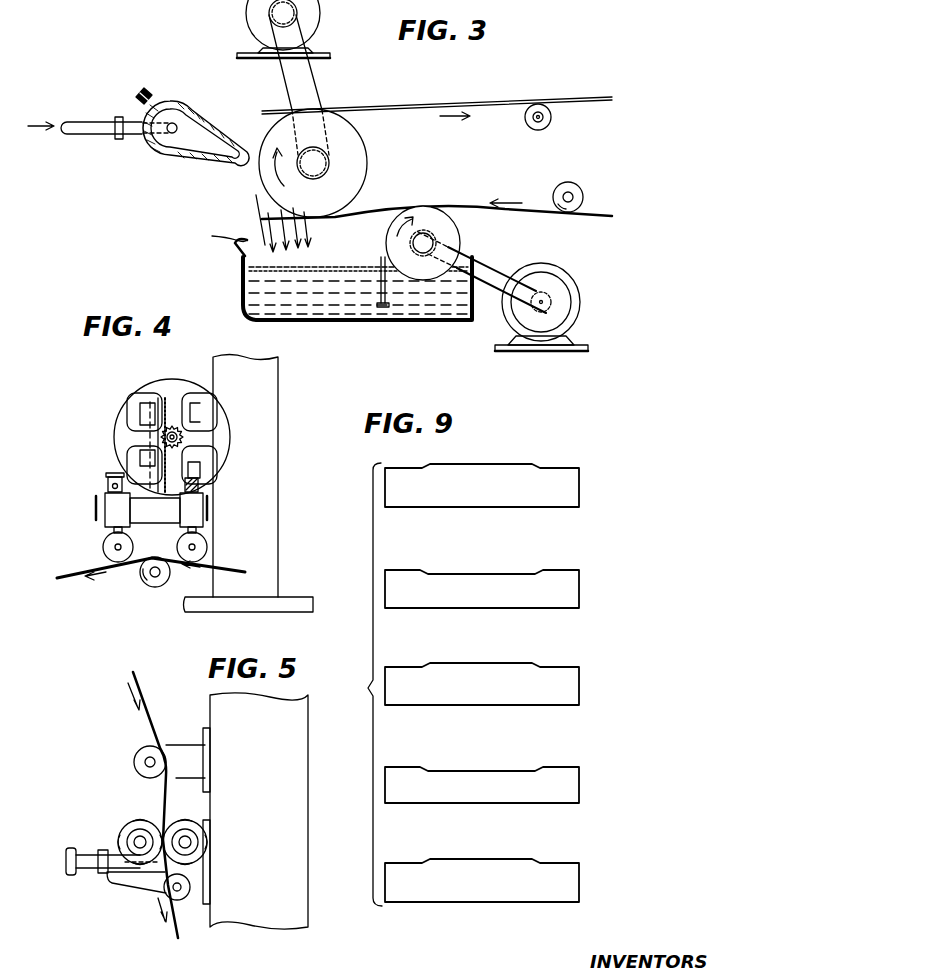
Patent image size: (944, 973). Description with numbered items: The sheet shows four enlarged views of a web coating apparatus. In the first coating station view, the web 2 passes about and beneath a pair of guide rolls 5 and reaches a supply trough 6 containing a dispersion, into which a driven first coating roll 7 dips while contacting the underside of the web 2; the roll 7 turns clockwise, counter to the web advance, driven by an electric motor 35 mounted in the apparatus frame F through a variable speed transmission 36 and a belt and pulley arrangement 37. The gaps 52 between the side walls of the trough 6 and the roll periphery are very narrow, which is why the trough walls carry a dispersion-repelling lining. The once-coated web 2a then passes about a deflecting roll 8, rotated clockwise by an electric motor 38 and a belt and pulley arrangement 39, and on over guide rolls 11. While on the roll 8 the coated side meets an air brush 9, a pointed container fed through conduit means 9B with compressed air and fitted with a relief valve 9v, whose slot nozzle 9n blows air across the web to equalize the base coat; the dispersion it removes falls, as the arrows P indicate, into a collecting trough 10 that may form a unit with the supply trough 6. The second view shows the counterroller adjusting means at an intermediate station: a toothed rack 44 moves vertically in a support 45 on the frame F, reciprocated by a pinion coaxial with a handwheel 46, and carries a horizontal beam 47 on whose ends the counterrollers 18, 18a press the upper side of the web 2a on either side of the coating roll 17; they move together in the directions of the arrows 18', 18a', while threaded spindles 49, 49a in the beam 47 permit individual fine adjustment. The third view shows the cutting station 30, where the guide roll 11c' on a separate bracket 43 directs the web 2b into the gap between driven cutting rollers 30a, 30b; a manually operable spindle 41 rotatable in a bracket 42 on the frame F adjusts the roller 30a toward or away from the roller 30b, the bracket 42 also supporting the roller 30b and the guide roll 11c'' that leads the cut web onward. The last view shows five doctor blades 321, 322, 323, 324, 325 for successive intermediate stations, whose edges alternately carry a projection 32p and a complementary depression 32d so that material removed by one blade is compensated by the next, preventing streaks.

In FIG. 3, the electric motor 38 is at (254, 8).
In FIG. 3, the apparatus frame F is at (256, 52).
In FIG. 4, the apparatus frame F is at (298, 600).
In FIG. 5, the apparatus frame F is at (296, 750).
In FIG. 3, the belt and pulley arrangement 39 is at (312, 86).
In FIG. 3, the deflecting roll 8 is at (352, 154).
In FIG. 3, the once-coated web 2a is at (411, 108).
In FIG. 4, the once-coated web 2a is at (221, 567).
In FIG. 3, the guide rolls 11 is at (527, 122).
In FIG. 3, the web 2 is at (524, 212).
In FIG. 3, the guide rolls 5 is at (573, 184).
In FIG. 3, the arrows P is at (258, 214).
In FIG. 3, the collecting trough 10 is at (319, 312).
In FIG. 3, the supply trough 6 is at (422, 310).
In FIG. 3, the first coating roll 7 is at (432, 220).
In FIG. 3, the gaps 52 is at (398, 258).
In FIG. 3, the belt and pulley arrangement 37 is at (500, 272).
In FIG. 3, the electric motor 35 is at (560, 286).
In FIG. 3, the variable speed transmission 36 is at (556, 333).
In FIG. 3, the air brush 9 is at (182, 122).
In FIG. 3, the relief valve 9v is at (140, 96).
In FIG. 3, the nozzle 9n is at (247, 150).
In FIG. 3, the conduit means 9B is at (167, 131).
In FIG. 4, the handwheel 46 is at (128, 408).
In FIG. 4, the toothed rack 44 is at (155, 410).
In FIG. 4, the bracket or support 45 is at (190, 418).
In FIG. 4, the threaded spindle 49a is at (112, 472).
In FIG. 4, the threaded spindle 49 is at (200, 479).
In FIG. 4, the horizontal beam 47 is at (147, 512).
In FIG. 4, the arrow 18a' is at (83, 503).
In FIG. 4, the arrow 18' is at (233, 510).
In FIG. 4, the counterroller 18a is at (97, 544).
In FIG. 4, the counterroller 18 is at (216, 544).
In FIG. 4, the coating roll 17 is at (158, 588).
In FIG. 5, the tape web lower run 2b is at (148, 698).
In FIG. 5, the guide roll 11c' is at (139, 753).
In FIG. 5, the separate bracket 43 is at (187, 768).
In FIG. 5, the cutting or slicing station 30 is at (130, 797).
In FIG. 5, the cutting roller 30a is at (124, 834).
In FIG. 5, the cutting roller 30b is at (192, 824).
In FIG. 5, the manually operable spindle 41 is at (70, 851).
In FIG. 5, the bracket 42 is at (127, 876).
In FIG. 5, the guide roll 11c'' is at (197, 905).
In FIG. 9, the doctor blade 321 is at (571, 487).
In FIG. 9, the doctor blade 322 is at (573, 590).
In FIG. 9, the doctor blade 323 is at (578, 688).
In FIG. 9, the doctor blade 324 is at (573, 784).
In FIG. 9, the doctor blade 325 is at (573, 885).
In FIG. 9, the projection 32p is at (512, 467).
In FIG. 9, the depression 32d is at (516, 573).